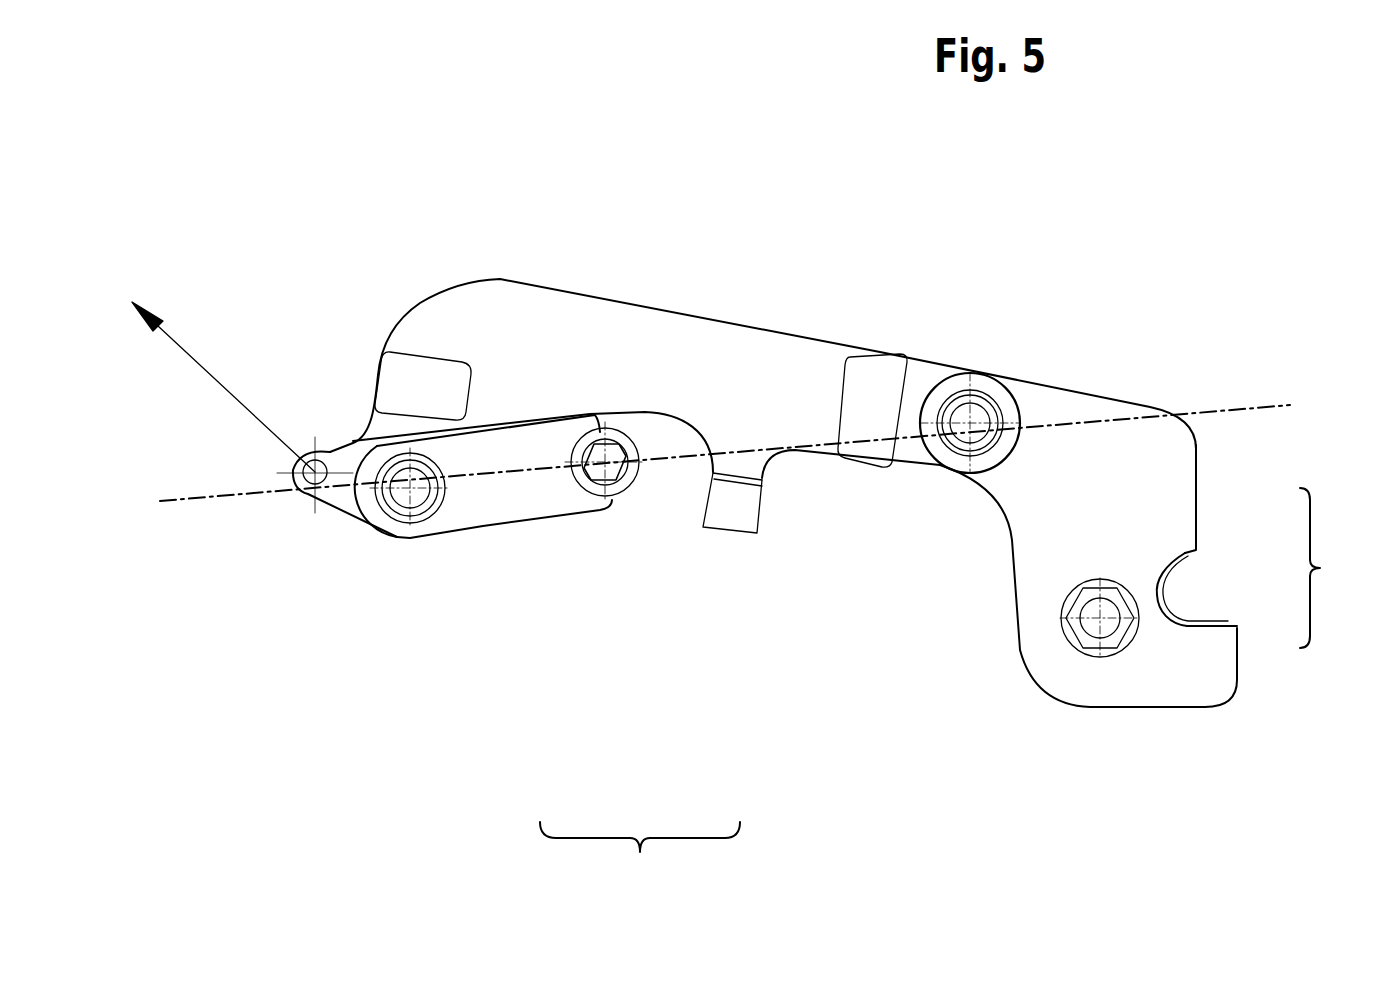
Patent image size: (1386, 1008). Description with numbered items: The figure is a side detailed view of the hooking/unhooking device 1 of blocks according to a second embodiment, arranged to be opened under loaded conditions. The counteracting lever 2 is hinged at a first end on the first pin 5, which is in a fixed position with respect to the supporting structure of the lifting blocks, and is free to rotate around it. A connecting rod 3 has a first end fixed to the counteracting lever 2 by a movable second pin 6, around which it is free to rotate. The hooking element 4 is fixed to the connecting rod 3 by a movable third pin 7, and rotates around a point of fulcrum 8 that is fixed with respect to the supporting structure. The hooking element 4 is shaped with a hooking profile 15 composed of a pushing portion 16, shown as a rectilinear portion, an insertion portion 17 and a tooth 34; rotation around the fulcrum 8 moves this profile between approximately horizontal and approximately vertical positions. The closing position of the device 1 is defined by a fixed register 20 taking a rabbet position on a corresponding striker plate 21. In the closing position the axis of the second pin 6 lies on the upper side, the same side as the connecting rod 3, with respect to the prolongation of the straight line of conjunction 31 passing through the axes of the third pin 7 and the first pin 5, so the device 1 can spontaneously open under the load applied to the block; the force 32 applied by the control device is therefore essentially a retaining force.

The hooking/unhooking device 1 is at (640, 862).
The counteracting lever 2 is at (483, 525).
The connecting rod 3 is at (672, 418).
The hooking element 4 is at (1018, 623).
The first pin 5 is at (605, 462).
The second pin 6 is at (410, 488).
The third pin 7 is at (970, 423).
The point of fulcrum 8 is at (1100, 618).
The hooking profile 15 is at (1335, 568).
The pushing portion 16 is at (1197, 472).
The insertion portion 17 is at (1167, 583).
The fixed register 20 is at (748, 537).
The striker plate 21 is at (760, 472).
The straight line of conjunction 31 is at (1228, 409).
The force 32 is at (212, 373).
The tooth 34 is at (1228, 627).